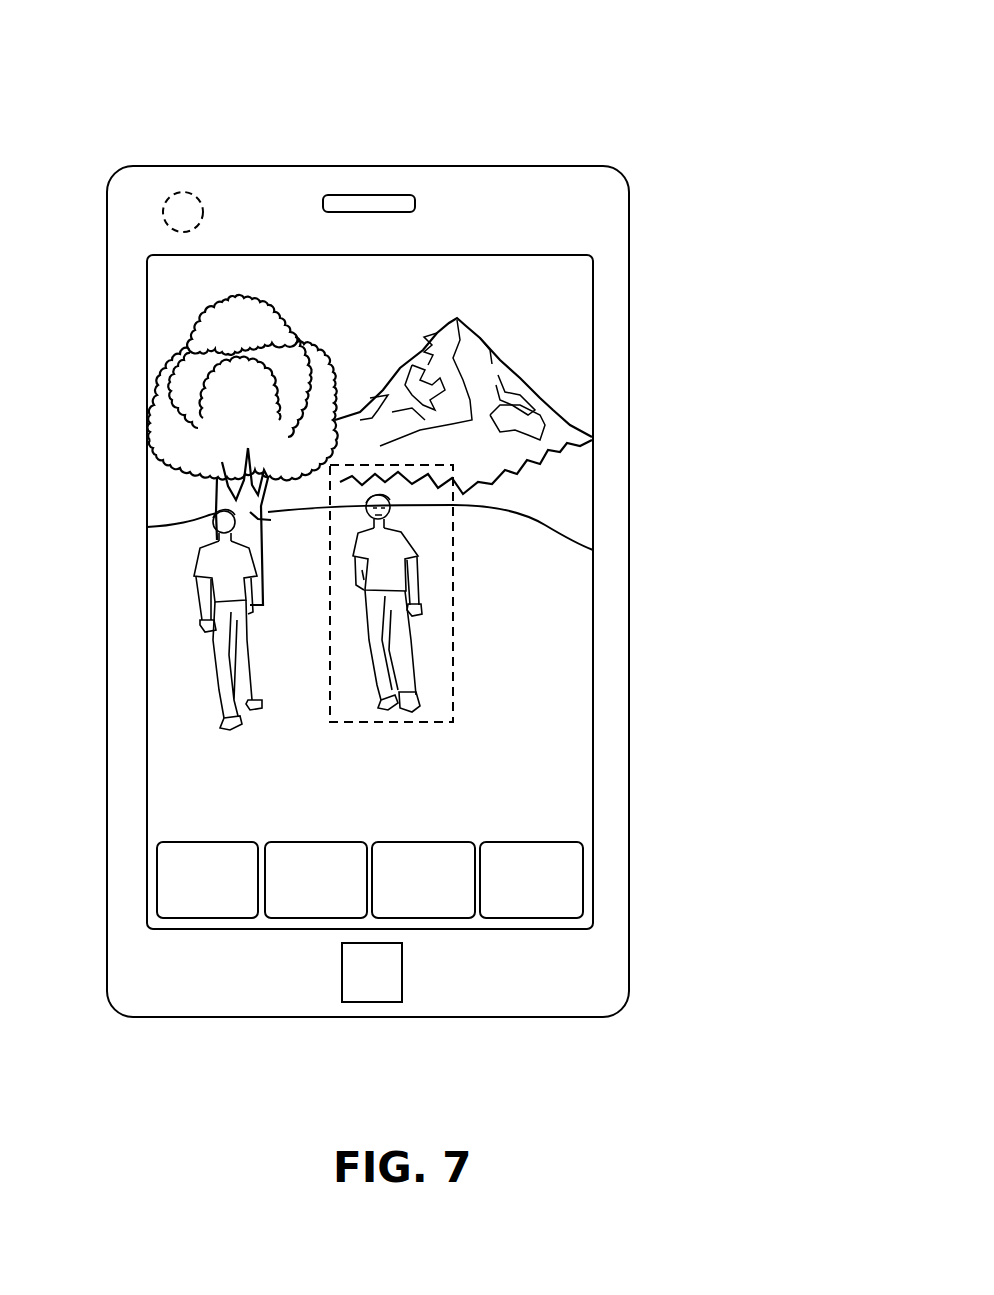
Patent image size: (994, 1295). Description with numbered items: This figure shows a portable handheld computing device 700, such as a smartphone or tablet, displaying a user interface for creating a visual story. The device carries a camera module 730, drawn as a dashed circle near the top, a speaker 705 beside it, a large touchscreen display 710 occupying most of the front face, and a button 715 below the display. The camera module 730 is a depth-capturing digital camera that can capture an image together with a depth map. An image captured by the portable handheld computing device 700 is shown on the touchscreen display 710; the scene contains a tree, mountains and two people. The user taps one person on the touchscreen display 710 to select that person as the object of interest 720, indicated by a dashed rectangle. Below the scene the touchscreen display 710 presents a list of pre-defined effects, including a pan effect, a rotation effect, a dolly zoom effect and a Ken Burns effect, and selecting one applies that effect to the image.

The portable handheld computing device 700 is at (558, 106).
The speaker 705 is at (372, 205).
The touchscreen display 710 is at (553, 663).
The button 715 is at (402, 982).
The object of interest 720 is at (453, 552).
The camera module 730 is at (173, 195).